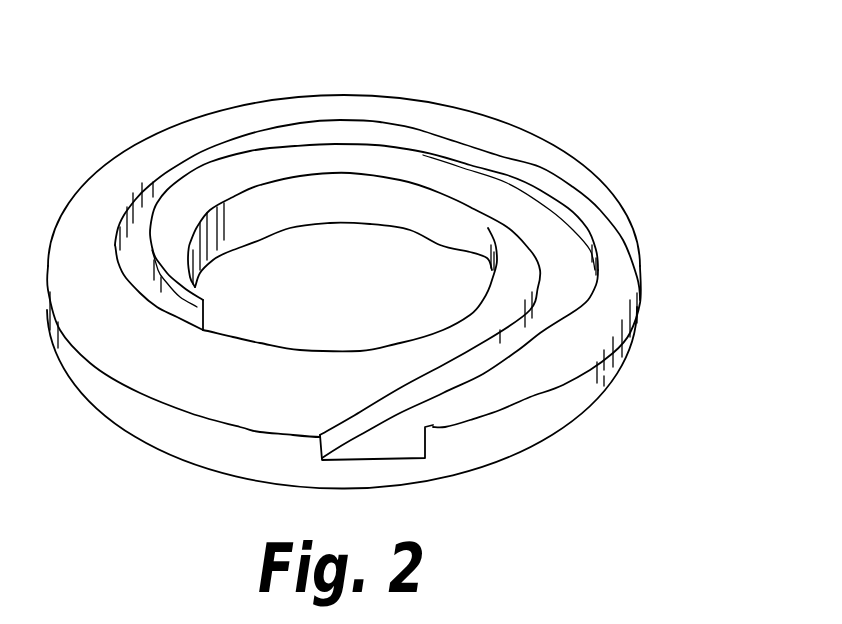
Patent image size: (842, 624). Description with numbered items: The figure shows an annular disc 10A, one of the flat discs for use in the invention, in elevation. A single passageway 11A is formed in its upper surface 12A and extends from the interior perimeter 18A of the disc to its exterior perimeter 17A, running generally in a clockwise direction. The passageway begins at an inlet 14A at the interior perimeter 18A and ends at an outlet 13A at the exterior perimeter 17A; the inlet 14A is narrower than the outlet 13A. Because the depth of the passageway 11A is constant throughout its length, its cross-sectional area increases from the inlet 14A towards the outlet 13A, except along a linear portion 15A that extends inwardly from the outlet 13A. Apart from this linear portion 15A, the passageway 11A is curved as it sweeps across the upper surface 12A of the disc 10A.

The annular disc 10A is at (430, 87).
The passageway 11A is at (547, 222).
The upper surface 12A is at (163, 150).
The outlet 13A is at (397, 440).
The inlet 14A is at (194, 313).
The linear portion 15A is at (467, 387).
The exterior perimeter 17A is at (203, 443).
The interior perimeter 18A is at (342, 208).